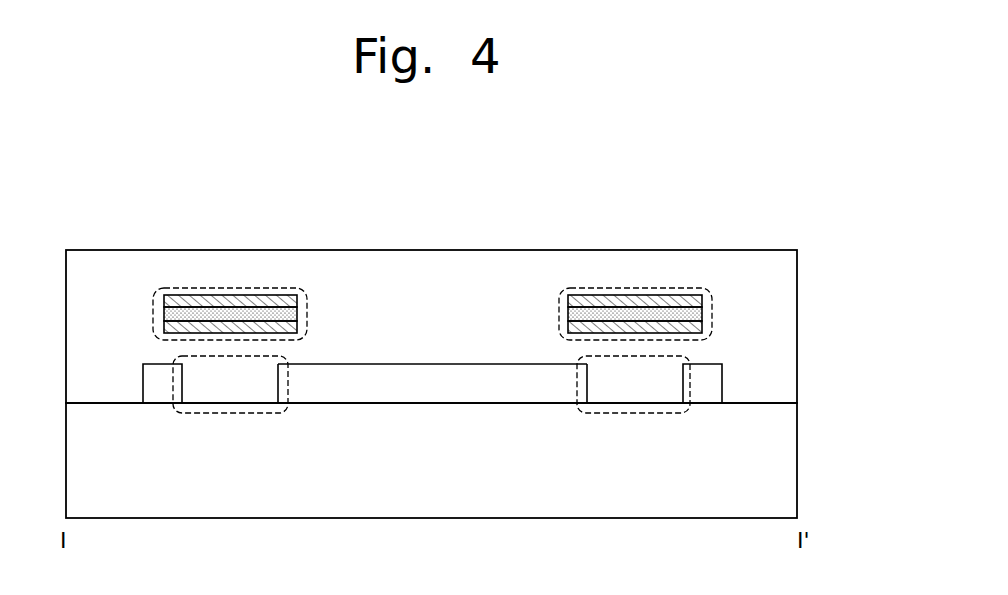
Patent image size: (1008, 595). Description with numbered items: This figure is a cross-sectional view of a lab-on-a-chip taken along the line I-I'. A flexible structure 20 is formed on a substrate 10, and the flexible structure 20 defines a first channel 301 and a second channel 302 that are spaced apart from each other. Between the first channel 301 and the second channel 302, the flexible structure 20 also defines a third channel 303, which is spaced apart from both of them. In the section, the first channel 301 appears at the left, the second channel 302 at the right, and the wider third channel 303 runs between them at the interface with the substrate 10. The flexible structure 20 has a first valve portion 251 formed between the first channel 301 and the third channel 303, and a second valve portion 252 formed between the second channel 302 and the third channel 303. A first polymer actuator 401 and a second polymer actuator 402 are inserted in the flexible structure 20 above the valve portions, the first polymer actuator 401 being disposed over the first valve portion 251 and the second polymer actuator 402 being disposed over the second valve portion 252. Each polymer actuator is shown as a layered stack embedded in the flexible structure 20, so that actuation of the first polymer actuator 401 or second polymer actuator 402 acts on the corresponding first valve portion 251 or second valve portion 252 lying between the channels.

The substrate 10 is at (787, 453).
The flexible structure 20 is at (787, 367).
The first valve portion 251 is at (226, 413).
The second valve portion 252 is at (630, 413).
The first channel 301 is at (158, 387).
The second channel 302 is at (706, 387).
The third channel 303 is at (441, 388).
The first polymer actuator 401 is at (225, 288).
The second polymer actuator 402 is at (631, 288).